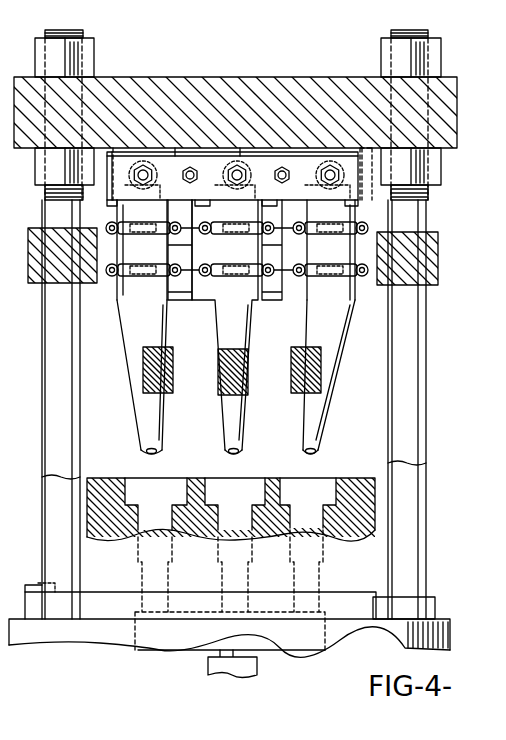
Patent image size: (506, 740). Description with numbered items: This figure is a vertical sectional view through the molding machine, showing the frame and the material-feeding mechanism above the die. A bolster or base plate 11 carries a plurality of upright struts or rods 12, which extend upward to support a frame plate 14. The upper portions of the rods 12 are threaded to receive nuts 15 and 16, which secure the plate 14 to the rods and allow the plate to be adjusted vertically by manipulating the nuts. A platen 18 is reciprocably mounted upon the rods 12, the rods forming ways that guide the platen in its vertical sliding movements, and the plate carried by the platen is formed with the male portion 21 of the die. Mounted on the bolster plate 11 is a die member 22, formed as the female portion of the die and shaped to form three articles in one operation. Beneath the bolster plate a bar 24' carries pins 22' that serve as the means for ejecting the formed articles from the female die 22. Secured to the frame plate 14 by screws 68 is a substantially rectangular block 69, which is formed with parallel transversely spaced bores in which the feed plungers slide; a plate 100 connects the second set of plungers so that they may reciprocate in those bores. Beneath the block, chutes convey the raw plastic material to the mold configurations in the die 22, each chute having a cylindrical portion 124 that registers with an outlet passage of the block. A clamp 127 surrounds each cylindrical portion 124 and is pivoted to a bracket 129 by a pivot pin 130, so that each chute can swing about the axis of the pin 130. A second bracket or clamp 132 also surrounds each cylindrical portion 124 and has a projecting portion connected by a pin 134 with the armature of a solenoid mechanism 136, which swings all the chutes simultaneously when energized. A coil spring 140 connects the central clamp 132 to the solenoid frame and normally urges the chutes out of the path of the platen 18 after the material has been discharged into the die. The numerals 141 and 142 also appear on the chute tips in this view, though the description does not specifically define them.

The bolster plate 11 is at (18, 640).
The upright struts or rods 12 is at (42, 390).
The frame plate 14 is at (450, 80).
The threaded nut 15 is at (38, 163).
The threaded nut 16 is at (94, 55).
The platen 18 is at (34, 285).
The male portion of die 21 is at (143, 380).
The die member 22 is at (242, 509).
The pins 22' is at (212, 590).
The bar 24' is at (191, 668).
The screws 68 is at (113, 148).
The block 69 is at (175, 148).
The plate 100 is at (118, 182).
The cylindrical portion 124 is at (118, 294).
The clamp 127 is at (362, 230).
The bracket 129 is at (240, 150).
The pivot pin 130 is at (353, 222).
The second bracket or clamp 132 is at (358, 275).
The pin 134 is at (290, 276).
The solenoid mechanism 136 is at (194, 310).
The coil spring 140 is at (160, 432).
The center nozzle 141 is at (242, 433).
The nozzle tip 142 is at (326, 420).